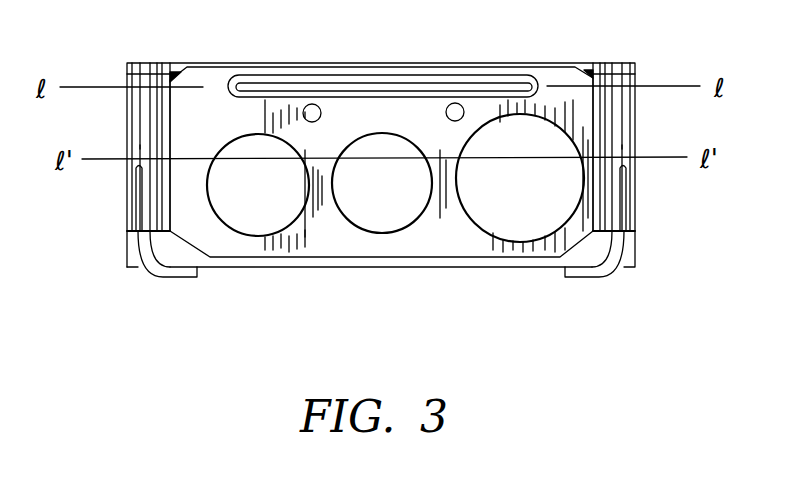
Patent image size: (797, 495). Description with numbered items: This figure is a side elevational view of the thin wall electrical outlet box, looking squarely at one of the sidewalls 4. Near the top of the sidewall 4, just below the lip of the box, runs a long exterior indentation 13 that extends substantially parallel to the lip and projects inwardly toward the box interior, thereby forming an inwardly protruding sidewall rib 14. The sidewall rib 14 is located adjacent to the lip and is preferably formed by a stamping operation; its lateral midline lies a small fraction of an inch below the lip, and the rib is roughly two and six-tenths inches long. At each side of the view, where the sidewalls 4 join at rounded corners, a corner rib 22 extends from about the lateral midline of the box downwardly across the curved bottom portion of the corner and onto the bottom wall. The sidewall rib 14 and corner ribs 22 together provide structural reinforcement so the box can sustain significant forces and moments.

The sidewall 4 is at (438, 242).
The exterior indentation 13 is at (245, 100).
The sidewall rib 14 is at (509, 63).
The corner rib 22 is at (130, 212).